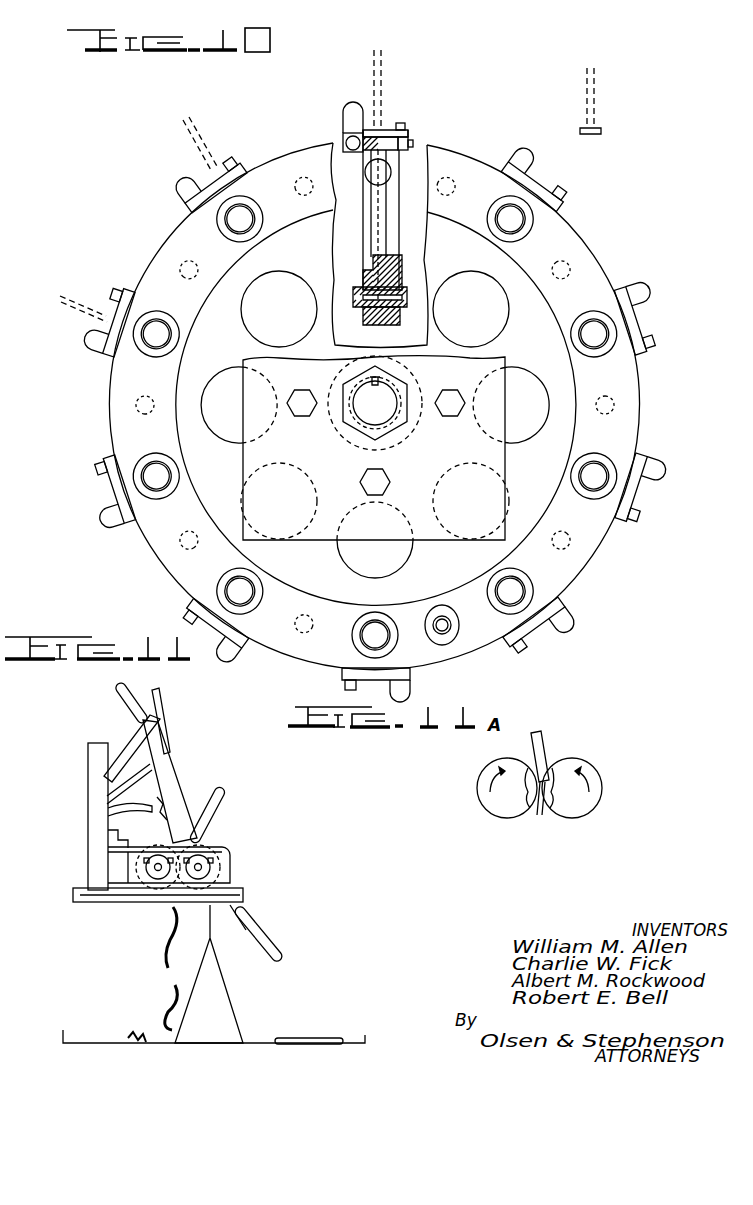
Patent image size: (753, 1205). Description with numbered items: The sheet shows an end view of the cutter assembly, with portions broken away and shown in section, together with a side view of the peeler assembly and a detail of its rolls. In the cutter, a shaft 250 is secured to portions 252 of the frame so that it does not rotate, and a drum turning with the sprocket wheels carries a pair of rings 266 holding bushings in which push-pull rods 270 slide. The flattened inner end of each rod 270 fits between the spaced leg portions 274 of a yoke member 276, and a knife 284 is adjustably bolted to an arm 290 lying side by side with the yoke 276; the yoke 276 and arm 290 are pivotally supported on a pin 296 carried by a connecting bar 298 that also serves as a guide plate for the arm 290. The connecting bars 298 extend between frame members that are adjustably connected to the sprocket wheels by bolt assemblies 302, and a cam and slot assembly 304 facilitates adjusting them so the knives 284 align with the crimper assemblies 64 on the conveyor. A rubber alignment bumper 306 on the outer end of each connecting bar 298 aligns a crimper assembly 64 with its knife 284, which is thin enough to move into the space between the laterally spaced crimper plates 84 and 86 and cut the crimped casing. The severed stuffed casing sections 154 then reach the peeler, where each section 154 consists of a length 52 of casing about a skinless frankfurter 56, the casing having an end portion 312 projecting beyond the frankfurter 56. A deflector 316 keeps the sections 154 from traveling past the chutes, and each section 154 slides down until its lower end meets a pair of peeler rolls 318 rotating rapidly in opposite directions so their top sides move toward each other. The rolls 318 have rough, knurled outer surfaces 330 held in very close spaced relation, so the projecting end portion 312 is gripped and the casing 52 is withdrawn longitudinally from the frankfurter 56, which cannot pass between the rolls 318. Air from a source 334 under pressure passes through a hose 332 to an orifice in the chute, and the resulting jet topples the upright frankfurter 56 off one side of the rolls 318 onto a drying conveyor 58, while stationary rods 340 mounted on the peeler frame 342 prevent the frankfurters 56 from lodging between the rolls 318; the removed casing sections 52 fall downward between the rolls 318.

In FIG. 10, the crimper assembly 64 is at (394, 72).
In FIG. 10, the crimper plate 84 is at (374, 69).
In FIG. 10, the crimper plate 86 is at (383, 90).
In FIG. 10, the alignment bumper 306 is at (196, 184).
In FIG. 10, the bolt assembly 302 is at (182, 269).
In FIG. 10, the knife 284 is at (387, 149).
In FIG. 10, the yoke leg portion 274 is at (365, 157).
In FIG. 10, the push-pull rod 270 is at (226, 585).
In FIG. 10, the yoke member 276 is at (400, 248).
In FIG. 10, the arm 290 is at (384, 216).
In FIG. 10, the connecting bar 298 is at (353, 293).
In FIG. 10, the pin 296 is at (334, 278).
In FIG. 10, the shaft 250 is at (389, 412).
In FIG. 10, the frame portion 252 is at (488, 454).
In FIG. 10, the ring 266 is at (172, 545).
In FIG. 10, the cam and slot assembly 304 is at (452, 641).
In FIG. 11, the frankfurter 56 is at (118, 687).
In FIG. 11A, the frankfurter 56 is at (540, 741).
In FIG. 11, the casing length 52 is at (118, 701).
In FIG. 11, the stuffed casing section 154 is at (147, 694).
In FIG. 11, the casing end portion 312 is at (138, 727).
In FIG. 11A, the casing end portion 312 is at (540, 818).
In FIG. 11, the deflector 316 is at (160, 723).
In FIG. 11, the hose 332 is at (118, 808).
In FIG. 11, the peeler roll 318 is at (160, 853).
In FIG. 11A, the peeler roll 318 is at (495, 794).
In FIG. 11, the source of air under pressure 334 is at (90, 854).
In FIG. 11, the stationary rod 340 is at (232, 871).
In FIG. 11, the peeler frame 342 is at (85, 906).
In FIG. 11, the drying conveyor 58 is at (368, 1041).
In FIG. 11A, the roll outer surface 330 is at (550, 773).